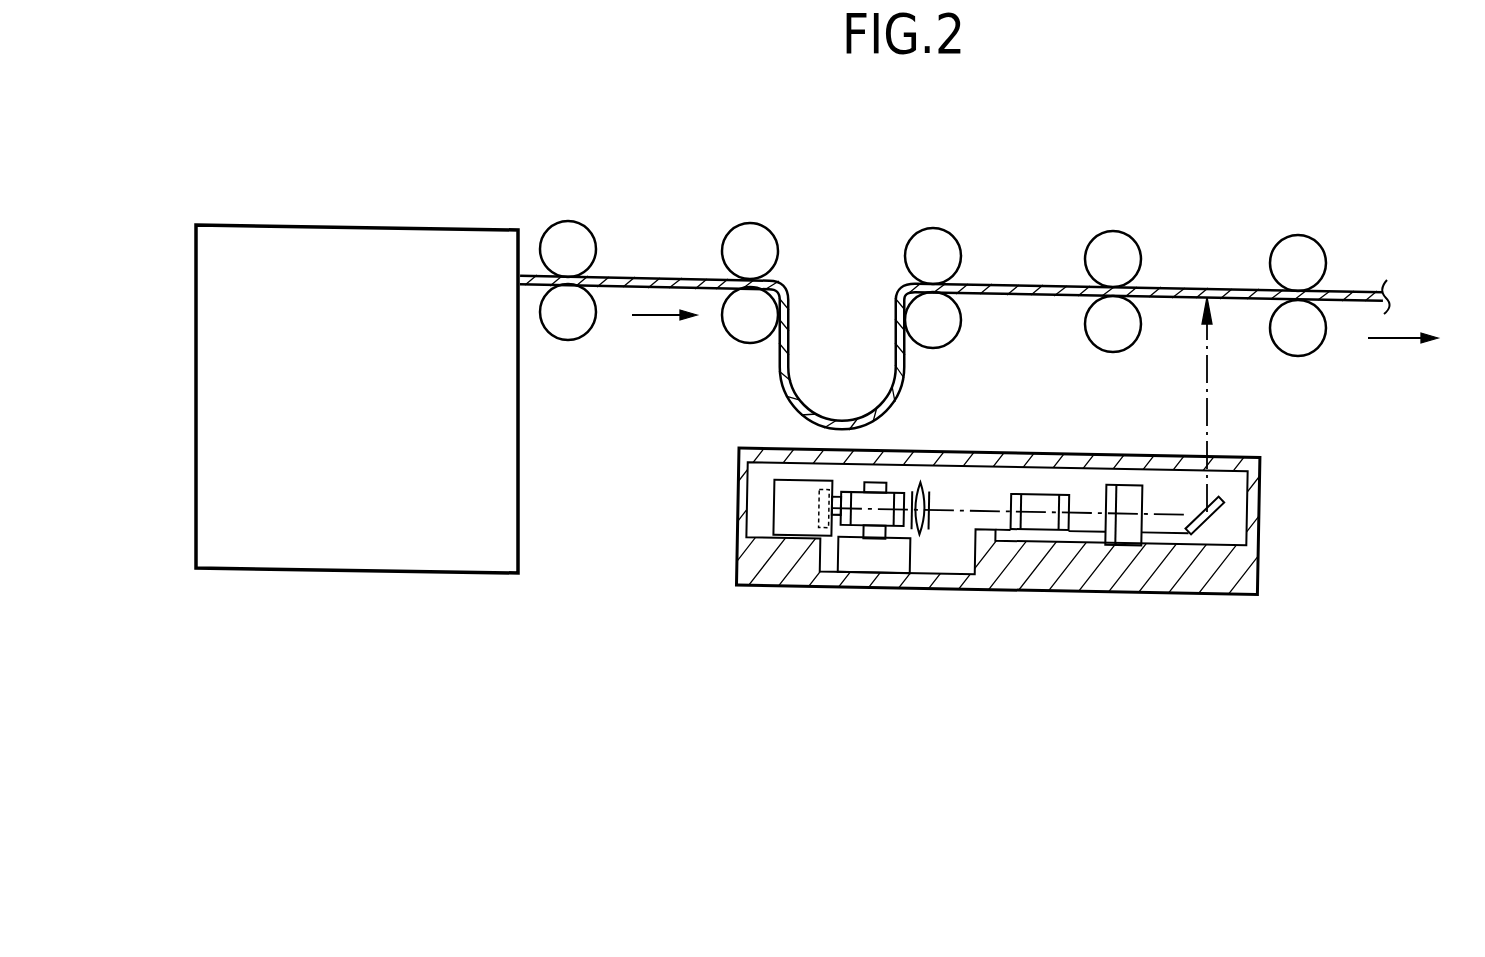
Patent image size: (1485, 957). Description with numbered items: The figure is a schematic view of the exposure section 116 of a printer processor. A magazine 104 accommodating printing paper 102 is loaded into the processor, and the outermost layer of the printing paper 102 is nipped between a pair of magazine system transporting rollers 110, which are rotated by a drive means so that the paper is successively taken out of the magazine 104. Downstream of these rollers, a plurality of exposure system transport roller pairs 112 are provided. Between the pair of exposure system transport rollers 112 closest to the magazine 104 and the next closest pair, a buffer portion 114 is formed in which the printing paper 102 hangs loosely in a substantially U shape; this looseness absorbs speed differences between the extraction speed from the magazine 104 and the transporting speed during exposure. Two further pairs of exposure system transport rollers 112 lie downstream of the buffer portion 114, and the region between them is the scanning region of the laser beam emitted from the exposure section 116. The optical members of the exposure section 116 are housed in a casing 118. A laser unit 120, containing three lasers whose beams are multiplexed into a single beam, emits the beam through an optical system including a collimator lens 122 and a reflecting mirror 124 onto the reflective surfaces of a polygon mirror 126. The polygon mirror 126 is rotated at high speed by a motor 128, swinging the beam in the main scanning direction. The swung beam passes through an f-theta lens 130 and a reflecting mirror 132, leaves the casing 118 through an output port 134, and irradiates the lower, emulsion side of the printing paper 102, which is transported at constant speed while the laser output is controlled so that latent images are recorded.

The printing paper 102 is at (636, 276).
The magazine 104 is at (321, 580).
The magazine system transporting rollers 110 is at (570, 210).
The exposure system transport roller pairs 112 is at (767, 212).
The buffer portion 114 is at (866, 355).
The exposure section 116 is at (889, 602).
The casing 118 is at (1053, 565).
The laser unit 120 is at (790, 521).
The collimator lens 122 is at (925, 535).
The reflecting mirror 124 is at (1130, 534).
The polygon mirror 126 is at (910, 482).
The motor 128 is at (855, 571).
The f-theta lens 130 is at (1045, 492).
The reflecting mirror 132 is at (1224, 500).
The output port 134 is at (1222, 460).